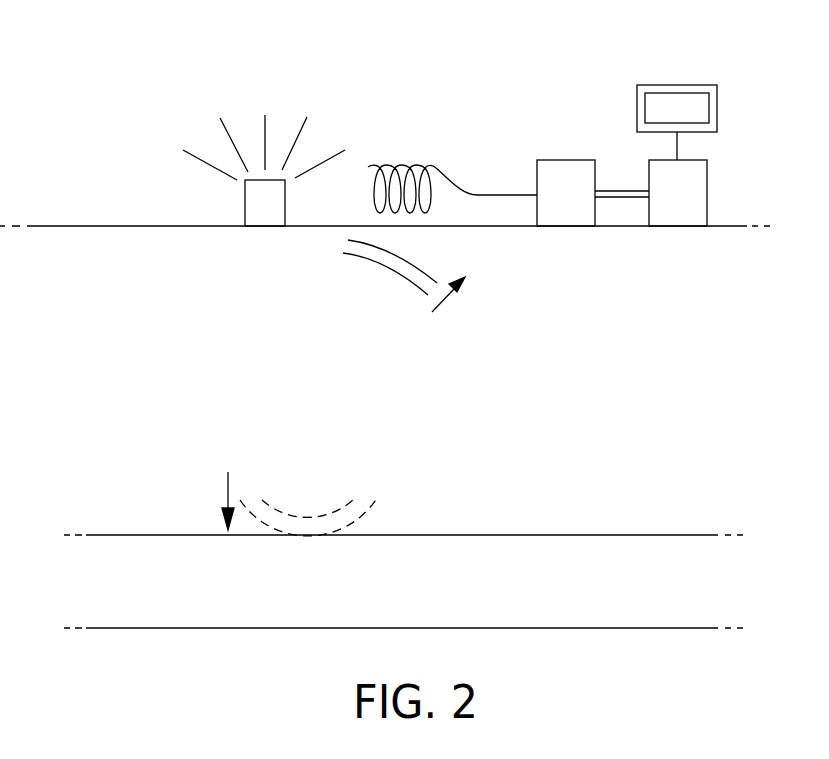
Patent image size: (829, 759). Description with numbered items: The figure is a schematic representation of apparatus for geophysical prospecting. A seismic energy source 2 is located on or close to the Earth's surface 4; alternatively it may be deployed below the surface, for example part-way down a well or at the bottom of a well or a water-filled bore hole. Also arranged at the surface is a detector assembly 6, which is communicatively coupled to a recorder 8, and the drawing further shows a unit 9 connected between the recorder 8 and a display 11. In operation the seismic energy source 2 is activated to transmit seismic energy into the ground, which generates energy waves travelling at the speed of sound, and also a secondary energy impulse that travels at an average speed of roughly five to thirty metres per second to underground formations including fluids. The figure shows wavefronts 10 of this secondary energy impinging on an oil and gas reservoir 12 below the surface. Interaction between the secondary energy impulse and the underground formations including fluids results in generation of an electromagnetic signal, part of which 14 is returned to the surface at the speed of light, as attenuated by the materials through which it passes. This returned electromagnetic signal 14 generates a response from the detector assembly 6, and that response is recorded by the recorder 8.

The seismic energy source 2 is at (252, 203).
The Earth's surface 4 is at (50, 226).
The detector assembly 6 is at (400, 167).
The recorder 8 is at (563, 171).
The computer 9 is at (693, 191).
The wavefronts 10 is at (280, 530).
The display 11 is at (679, 101).
The oil and gas reservoir 12 is at (422, 593).
The returned part of electromagnetic signal 14 is at (381, 269).